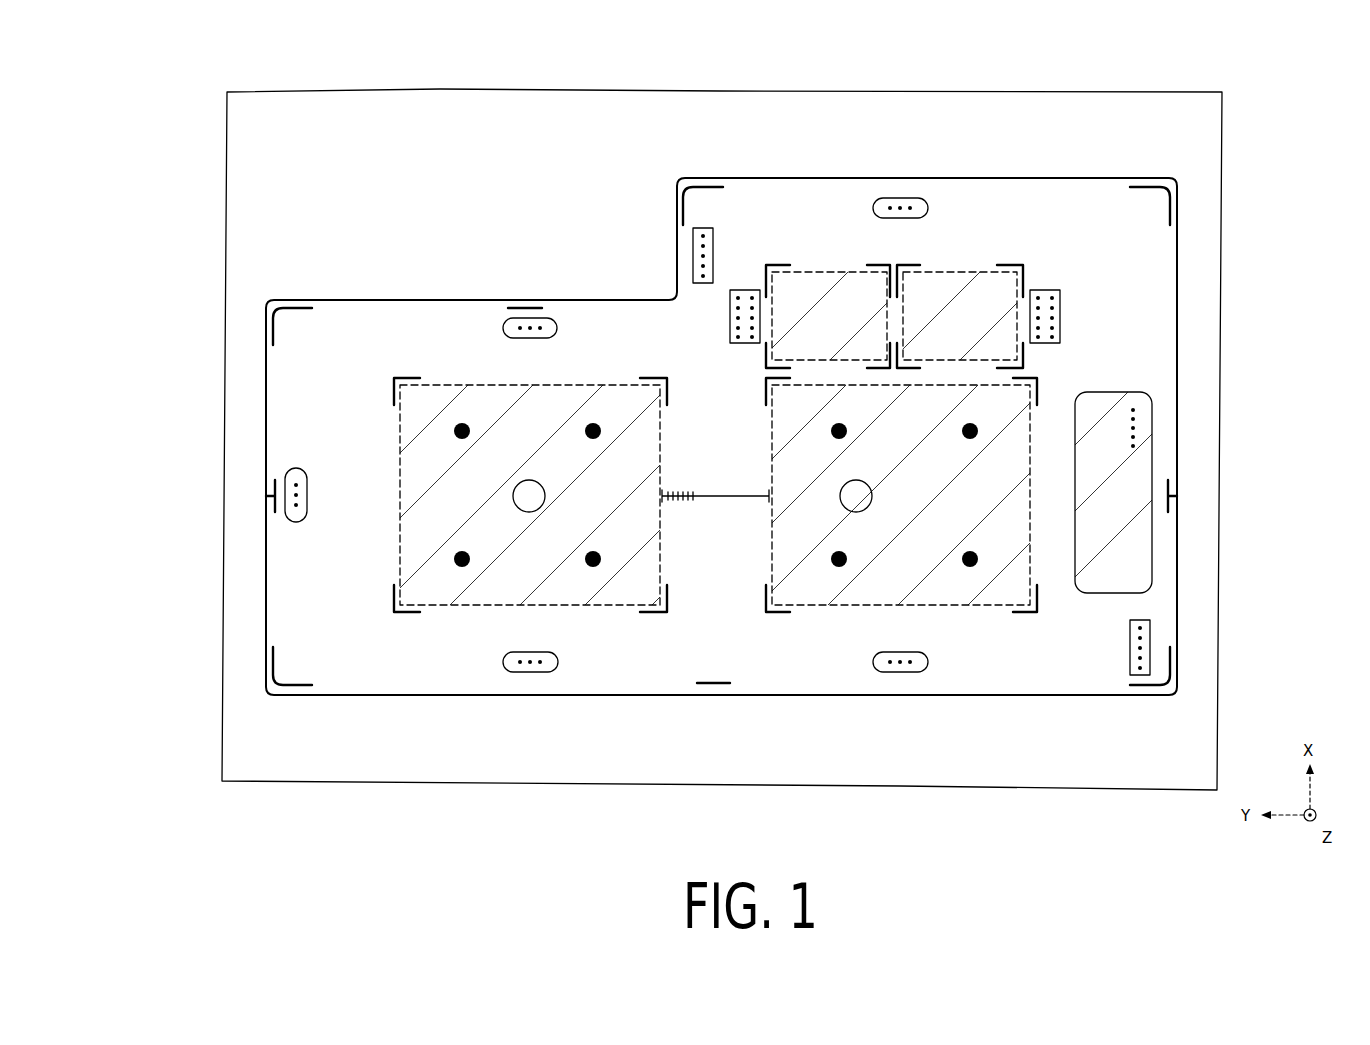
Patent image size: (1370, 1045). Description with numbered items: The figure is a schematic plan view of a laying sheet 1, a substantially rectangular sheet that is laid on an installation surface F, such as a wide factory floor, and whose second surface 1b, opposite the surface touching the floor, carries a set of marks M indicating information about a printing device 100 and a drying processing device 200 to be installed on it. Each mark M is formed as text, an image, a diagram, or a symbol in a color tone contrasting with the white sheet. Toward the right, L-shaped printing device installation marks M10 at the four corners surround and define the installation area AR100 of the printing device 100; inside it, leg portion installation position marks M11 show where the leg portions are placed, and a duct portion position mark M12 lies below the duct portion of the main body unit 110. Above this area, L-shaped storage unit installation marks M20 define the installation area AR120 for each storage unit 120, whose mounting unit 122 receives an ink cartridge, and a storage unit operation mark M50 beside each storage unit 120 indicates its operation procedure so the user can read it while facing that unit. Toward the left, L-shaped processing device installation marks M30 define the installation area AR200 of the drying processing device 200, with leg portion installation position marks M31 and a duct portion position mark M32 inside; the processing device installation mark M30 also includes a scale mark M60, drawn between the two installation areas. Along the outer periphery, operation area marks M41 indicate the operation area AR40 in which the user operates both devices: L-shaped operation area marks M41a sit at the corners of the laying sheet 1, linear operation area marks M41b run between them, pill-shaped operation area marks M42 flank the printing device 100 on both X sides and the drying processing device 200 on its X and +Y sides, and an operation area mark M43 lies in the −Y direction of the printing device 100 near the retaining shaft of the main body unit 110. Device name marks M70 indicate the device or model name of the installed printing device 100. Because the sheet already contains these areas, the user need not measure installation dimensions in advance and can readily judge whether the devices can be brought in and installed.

The installation surface F is at (440, 96).
The laying sheet 1 is at (450, 305).
The second surface 1b is at (410, 305).
The mark M is at (752, 449).
The operation area AR40 is at (493, 318).
The operation area mark M41 is at (802, 438).
The operation area mark M41a is at (300, 305).
The operation area mark M41b is at (525, 306).
The operation area mark M42 is at (557, 328).
The operation area mark M43 is at (1152, 412).
The storage unit operation mark M50 is at (730, 315).
The device name mark M70 is at (693, 245).
The scale mark M60 is at (714, 490).
The drying processing device 200 is at (485, 380).
The installation area AR200 is at (437, 510).
The processing device installation mark M30 is at (400, 378).
The leg portion installation position mark M31 is at (463, 423).
The duct portion position mark M32 is at (545, 496).
The printing device 100 is at (962, 660).
The main body unit 110 is at (950, 612).
The installation area AR100 is at (795, 550).
The printing device installation mark M10 is at (766, 397).
The leg portion installation position mark M11 is at (840, 423).
The duct portion position mark M12 is at (872, 496).
The storage unit 120 is at (845, 212).
The mounting unit 122 is at (850, 272).
The installation area AR120 is at (810, 285).
The storage unit installation mark M20 is at (778, 265).